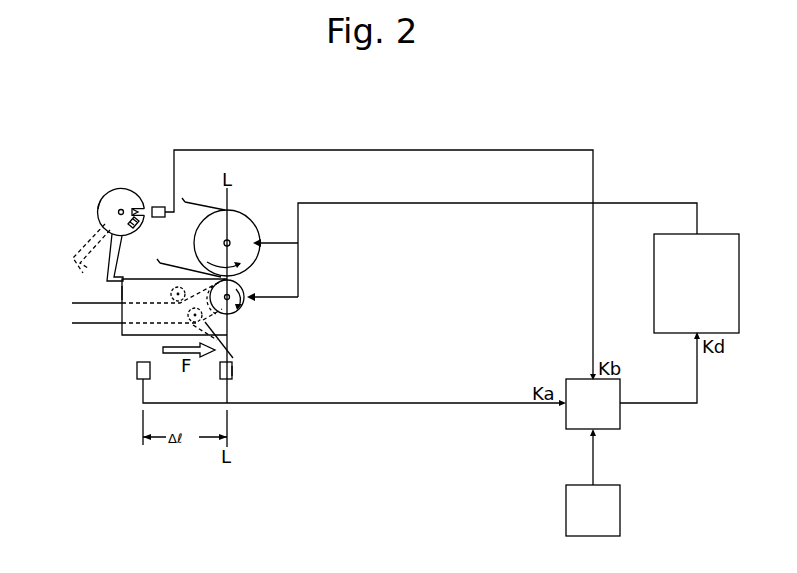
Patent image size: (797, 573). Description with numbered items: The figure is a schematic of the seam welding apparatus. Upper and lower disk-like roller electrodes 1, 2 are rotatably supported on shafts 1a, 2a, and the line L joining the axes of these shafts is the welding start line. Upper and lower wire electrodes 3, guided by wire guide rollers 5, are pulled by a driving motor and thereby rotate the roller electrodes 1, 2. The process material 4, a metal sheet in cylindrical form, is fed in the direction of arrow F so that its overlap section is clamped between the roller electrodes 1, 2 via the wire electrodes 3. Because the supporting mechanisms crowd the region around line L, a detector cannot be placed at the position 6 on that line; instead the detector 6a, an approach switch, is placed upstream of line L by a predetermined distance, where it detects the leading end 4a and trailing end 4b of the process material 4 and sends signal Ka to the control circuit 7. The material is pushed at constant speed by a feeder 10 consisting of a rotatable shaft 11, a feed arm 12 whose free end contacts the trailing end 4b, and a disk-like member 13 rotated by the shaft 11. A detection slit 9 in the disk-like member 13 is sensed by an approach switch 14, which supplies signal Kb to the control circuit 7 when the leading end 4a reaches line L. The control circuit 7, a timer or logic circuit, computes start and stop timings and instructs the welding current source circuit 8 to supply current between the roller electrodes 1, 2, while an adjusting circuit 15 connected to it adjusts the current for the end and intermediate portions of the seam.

The roller electrode 1 is at (237, 226).
The shaft 1a is at (232, 245).
The roller electrode 2 is at (244, 308).
The shaft 2a is at (244, 292).
The wire electrodes 3 is at (200, 203).
The process material 4 is at (145, 335).
The leading end 4a is at (228, 327).
The trailing end 4b is at (122, 293).
The wire guide rollers 5 is at (174, 289).
The detector position 6 is at (233, 373).
The detector 6a is at (137, 377).
The control circuit 7 is at (616, 413).
The welding current source circuit 8 is at (719, 243).
The detection slit 9 is at (131, 208).
The feeder 10 is at (105, 196).
The rotatable shaft 11 is at (121, 212).
The feed arm 12 is at (118, 243).
The disk-like member 13 is at (99, 203).
The approach switch 14 is at (157, 207).
The adjusting circuit 15 is at (617, 510).